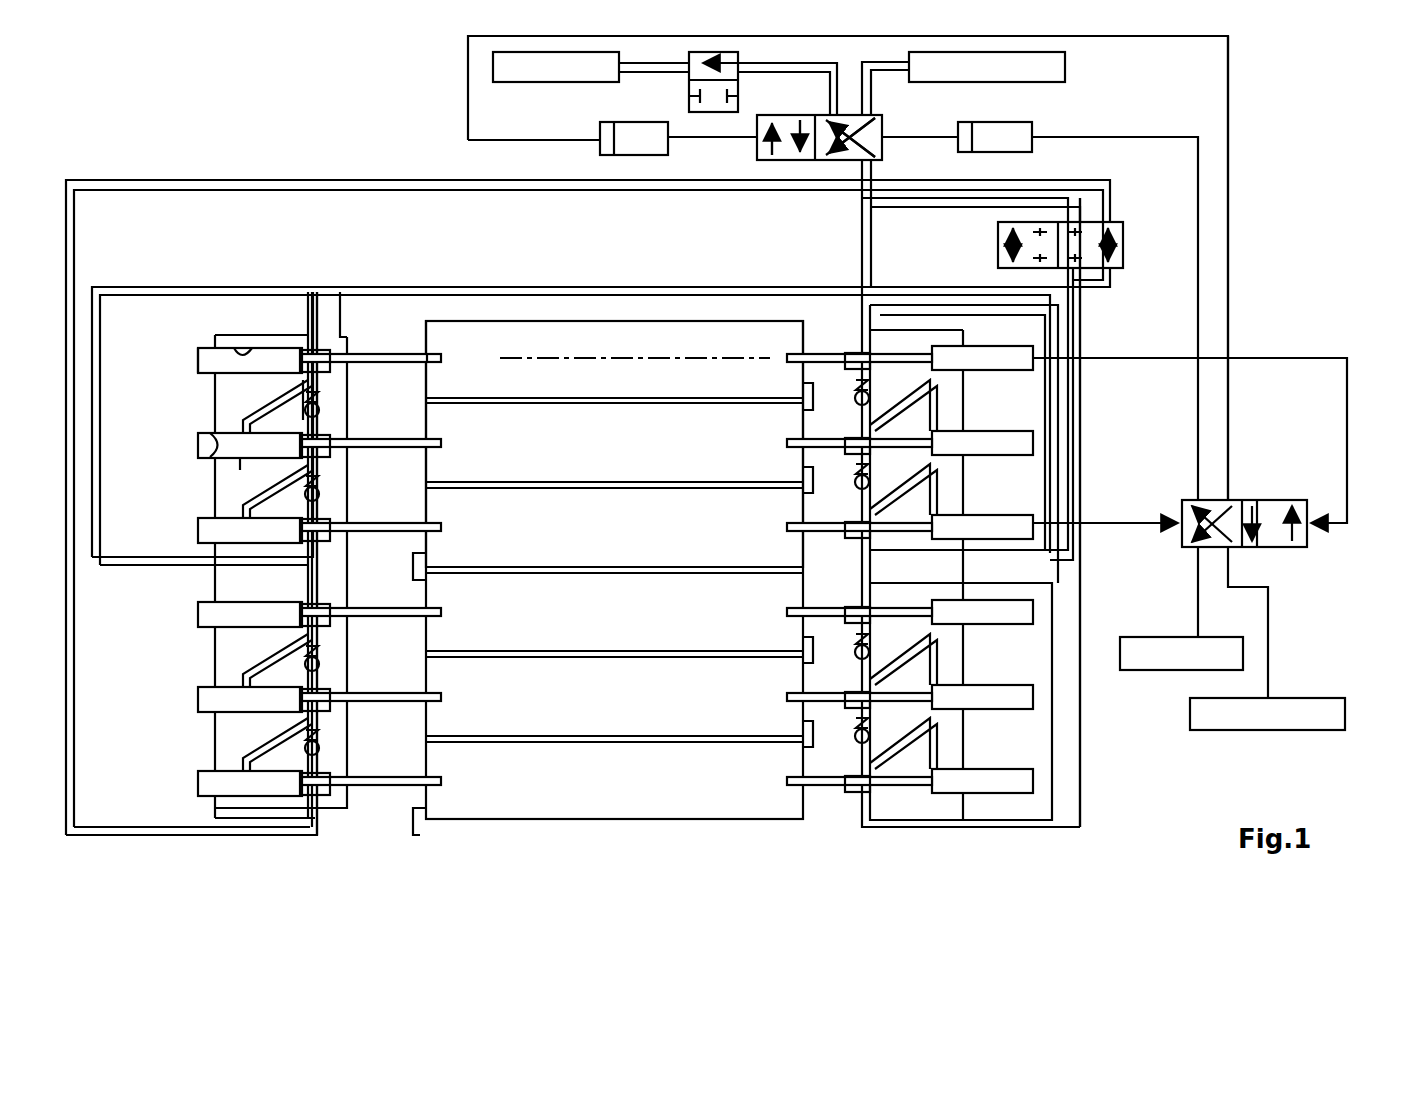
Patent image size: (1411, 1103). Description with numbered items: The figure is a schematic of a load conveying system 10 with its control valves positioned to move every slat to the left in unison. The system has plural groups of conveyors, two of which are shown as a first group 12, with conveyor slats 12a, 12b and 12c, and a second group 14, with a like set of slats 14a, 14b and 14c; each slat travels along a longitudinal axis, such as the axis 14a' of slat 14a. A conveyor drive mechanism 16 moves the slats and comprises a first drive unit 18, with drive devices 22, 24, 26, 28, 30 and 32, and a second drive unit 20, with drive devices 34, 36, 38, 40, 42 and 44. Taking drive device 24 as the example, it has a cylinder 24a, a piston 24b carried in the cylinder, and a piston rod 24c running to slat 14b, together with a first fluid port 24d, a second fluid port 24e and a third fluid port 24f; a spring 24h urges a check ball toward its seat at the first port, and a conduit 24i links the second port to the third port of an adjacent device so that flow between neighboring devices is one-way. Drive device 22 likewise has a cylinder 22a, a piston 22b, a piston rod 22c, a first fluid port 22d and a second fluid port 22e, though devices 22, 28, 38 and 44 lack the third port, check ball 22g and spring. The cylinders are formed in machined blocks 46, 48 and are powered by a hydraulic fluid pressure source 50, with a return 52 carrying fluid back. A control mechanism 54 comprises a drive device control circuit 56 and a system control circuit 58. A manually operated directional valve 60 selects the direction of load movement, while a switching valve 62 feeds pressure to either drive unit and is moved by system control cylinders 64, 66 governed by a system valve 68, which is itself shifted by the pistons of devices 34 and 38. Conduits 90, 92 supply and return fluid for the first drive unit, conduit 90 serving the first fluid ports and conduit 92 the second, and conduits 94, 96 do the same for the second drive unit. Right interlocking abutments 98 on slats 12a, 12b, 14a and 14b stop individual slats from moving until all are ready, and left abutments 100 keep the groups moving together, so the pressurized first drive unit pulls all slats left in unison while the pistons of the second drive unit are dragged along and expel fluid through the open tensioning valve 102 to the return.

The load conveying system 10 is at (185, 158).
The group of conveyors 12 is at (790, 826).
The conveyor slat 12a is at (640, 628).
The conveyor slat 12b is at (640, 712).
The conveyor slat 12c is at (640, 796).
The group of conveyors 14 is at (420, 300).
The conveyor slat 14a is at (614, 362).
The longitudinal axis 14a' is at (635, 376).
The conveyor slat 14b is at (640, 458).
The conveyor slat 14c is at (640, 543).
The conveyor drive mechanism 16 is at (1116, 748).
The first drive unit 18 is at (334, 816).
The second drive unit 20 is at (840, 816).
The drive device 22 is at (306, 351).
The cylinder 22a is at (242, 348).
The piston 22b is at (198, 355).
The piston rod 22c is at (370, 355).
The first fluid port 22d is at (335, 336).
The second fluid port 22e is at (320, 374).
The check ball 22g is at (420, 364).
The drive device 24 is at (303, 459).
The cylinder 24a is at (210, 440).
The piston 24b is at (238, 462).
The piston rod 24c is at (420, 447).
The first fluid port 24d is at (328, 452).
The second fluid port 24e is at (322, 490).
The third fluid port 24f is at (240, 425).
The spring 24h is at (322, 400).
The conduit 24i is at (305, 405).
The drive device 26 is at (195, 540).
The drive device 28 is at (238, 625).
The drive device 30 is at (242, 712).
The drive device 32 is at (230, 768).
The drive device 34 is at (970, 372).
The drive device 36 is at (960, 455).
The drive device 38 is at (955, 513).
The drive device 40 is at (985, 622).
The drive device 42 is at (985, 710).
The drive device 44 is at (985, 796).
The machined block 46 is at (305, 335).
The machined block 48 is at (965, 637).
The hydraulic fluid pressure source 50 is at (1066, 67).
The return 52 is at (548, 84).
The control mechanism 54 is at (1265, 294).
The drive device control circuit 56 is at (835, 232).
The system control circuit 58 is at (1172, 345).
The directional valve 60 is at (997, 245).
The switching valve 62 is at (886, 126).
The system control cylinder 64 is at (1010, 122).
The system control cylinder 66 is at (635, 121).
The system valve 68 is at (1278, 500).
The pressure conduit 90 is at (620, 288).
The pressure conduit 92 is at (410, 178).
The conduit 94 is at (1070, 420).
The conduit 96 is at (1082, 492).
The right interlocking abutment 98 is at (802, 478).
The left abutment 100 is at (420, 575).
The tensioning valve 102 is at (742, 85).